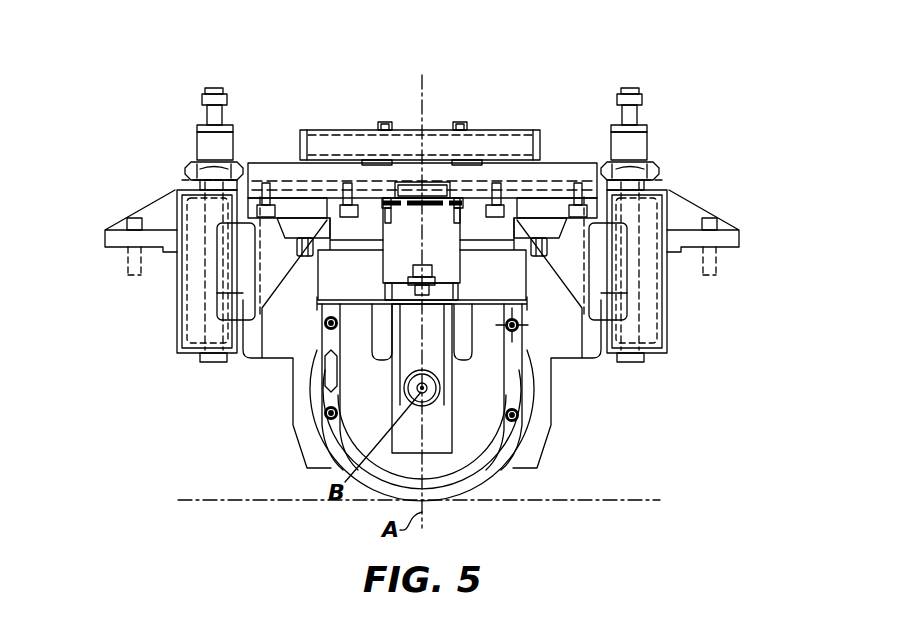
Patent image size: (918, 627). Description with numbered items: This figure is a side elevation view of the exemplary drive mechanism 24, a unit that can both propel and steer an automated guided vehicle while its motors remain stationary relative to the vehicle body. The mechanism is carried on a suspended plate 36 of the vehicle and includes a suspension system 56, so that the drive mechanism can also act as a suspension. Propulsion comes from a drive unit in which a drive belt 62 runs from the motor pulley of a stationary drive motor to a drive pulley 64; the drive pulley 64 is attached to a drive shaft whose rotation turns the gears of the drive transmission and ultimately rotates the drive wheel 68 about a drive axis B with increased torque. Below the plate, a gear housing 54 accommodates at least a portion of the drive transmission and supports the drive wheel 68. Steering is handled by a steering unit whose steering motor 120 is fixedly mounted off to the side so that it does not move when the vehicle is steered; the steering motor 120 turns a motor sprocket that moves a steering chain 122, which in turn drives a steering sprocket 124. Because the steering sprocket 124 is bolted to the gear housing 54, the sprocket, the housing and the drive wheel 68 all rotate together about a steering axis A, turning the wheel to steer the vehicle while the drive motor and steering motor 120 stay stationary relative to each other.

The drive mechanism 24 is at (146, 102).
The suspension system 56 is at (120, 192).
The gear housing 54 is at (285, 310).
The suspended plate 36 is at (579, 167).
The drive pulley 64 is at (360, 130).
The drive belt 62 is at (320, 140).
The steering chain 122 is at (410, 198).
The steering sprocket 124 is at (437, 203).
The steering motor 120 is at (403, 358).
The drive wheel 68 is at (480, 470).